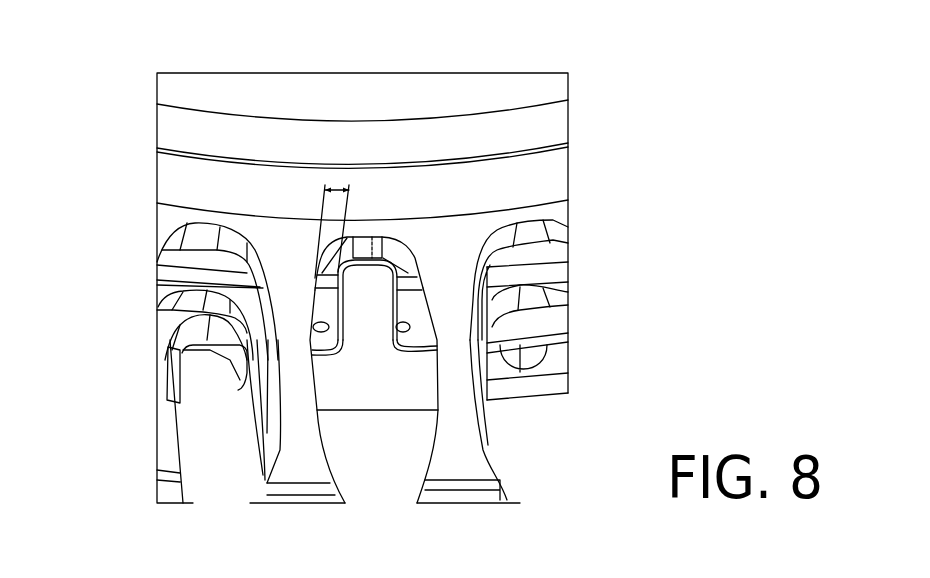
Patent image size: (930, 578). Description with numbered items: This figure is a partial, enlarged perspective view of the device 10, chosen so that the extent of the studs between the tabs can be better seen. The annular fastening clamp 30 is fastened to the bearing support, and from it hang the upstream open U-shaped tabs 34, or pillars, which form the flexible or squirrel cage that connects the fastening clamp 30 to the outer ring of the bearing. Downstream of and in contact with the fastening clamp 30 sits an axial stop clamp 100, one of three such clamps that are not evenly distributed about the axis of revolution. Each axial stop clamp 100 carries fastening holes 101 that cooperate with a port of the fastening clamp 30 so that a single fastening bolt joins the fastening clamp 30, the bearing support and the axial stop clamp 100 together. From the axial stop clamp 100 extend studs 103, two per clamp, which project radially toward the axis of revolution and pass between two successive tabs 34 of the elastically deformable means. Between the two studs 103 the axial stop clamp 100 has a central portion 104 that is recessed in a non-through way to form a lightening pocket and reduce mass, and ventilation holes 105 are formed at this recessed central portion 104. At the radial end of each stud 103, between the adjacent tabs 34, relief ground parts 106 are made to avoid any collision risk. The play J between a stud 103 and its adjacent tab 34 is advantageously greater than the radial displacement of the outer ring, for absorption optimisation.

The device 10 is at (600, 112).
The annular fastening clamp 30 is at (163, 330).
The tabs 34 is at (260, 427).
The axial stop clamp 100 is at (197, 375).
The fastening holes 101 is at (243, 375).
The studs 103 is at (363, 300).
The central portion 104 is at (560, 365).
The ventilation holes 105 is at (541, 355).
The relief ground parts 106 is at (358, 250).
The play J is at (337, 183).